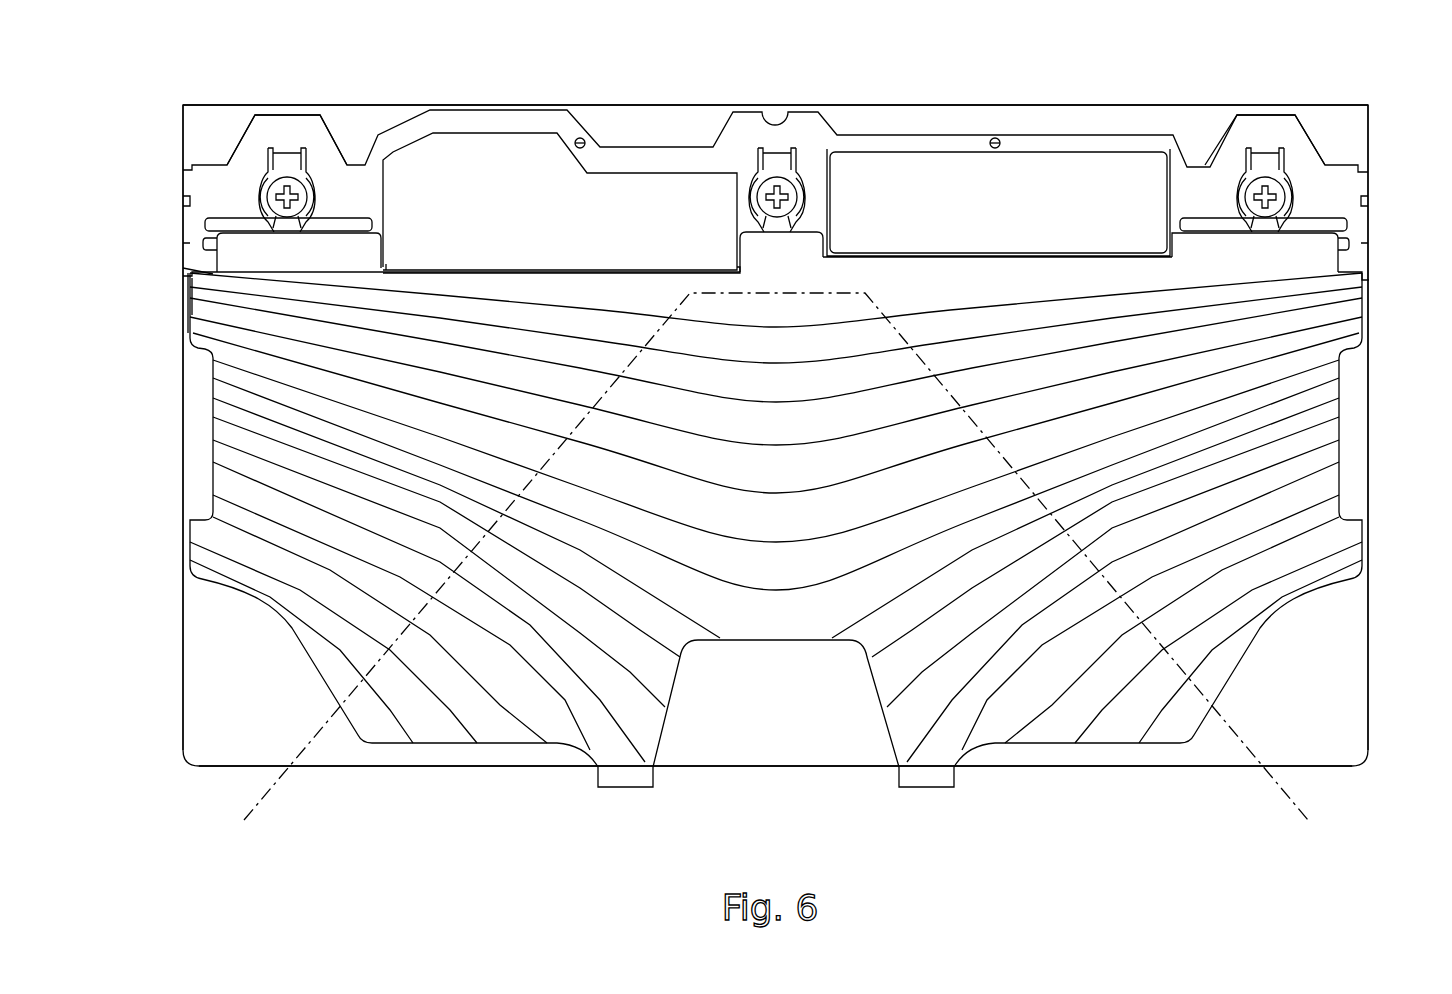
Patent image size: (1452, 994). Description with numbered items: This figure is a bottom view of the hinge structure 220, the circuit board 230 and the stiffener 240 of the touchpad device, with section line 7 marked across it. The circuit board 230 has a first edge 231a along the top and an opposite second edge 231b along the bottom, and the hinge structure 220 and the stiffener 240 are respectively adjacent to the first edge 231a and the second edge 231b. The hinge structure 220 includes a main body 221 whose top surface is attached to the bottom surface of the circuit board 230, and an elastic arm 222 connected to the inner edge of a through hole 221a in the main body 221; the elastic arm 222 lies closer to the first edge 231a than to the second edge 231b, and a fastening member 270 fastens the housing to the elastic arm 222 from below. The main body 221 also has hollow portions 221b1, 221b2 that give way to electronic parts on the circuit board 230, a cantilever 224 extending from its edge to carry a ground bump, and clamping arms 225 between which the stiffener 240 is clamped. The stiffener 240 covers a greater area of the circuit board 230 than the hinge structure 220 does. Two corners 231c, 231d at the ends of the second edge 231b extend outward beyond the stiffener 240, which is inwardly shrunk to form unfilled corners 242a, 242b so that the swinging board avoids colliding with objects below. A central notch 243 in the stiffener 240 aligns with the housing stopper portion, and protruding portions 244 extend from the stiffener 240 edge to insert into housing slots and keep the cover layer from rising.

The section line 7 is at (244, 828).
The hinge structure 220 is at (175, 187).
The main body 221 is at (283, 127).
The through hole 221a is at (332, 196).
The hollow portion 221b1 is at (490, 128).
The hollow portion 221b2 is at (941, 148).
The elastic arm 222 is at (272, 160).
The cantilever 224 is at (205, 243).
The clamping arm 225 is at (190, 297).
The circuit board 230 is at (183, 397).
The first edge 231a is at (1103, 105).
The second edge 231b is at (1043, 767).
The corner 231c is at (176, 774).
The corner 231d is at (1376, 774).
The stiffener 240 is at (226, 479).
The unfilled corner 242a is at (235, 645).
The unfilled corner 242b is at (1310, 648).
The notch 243 is at (772, 665).
The protruding portion 244 is at (628, 777).
The fastening member 270 is at (305, 188).